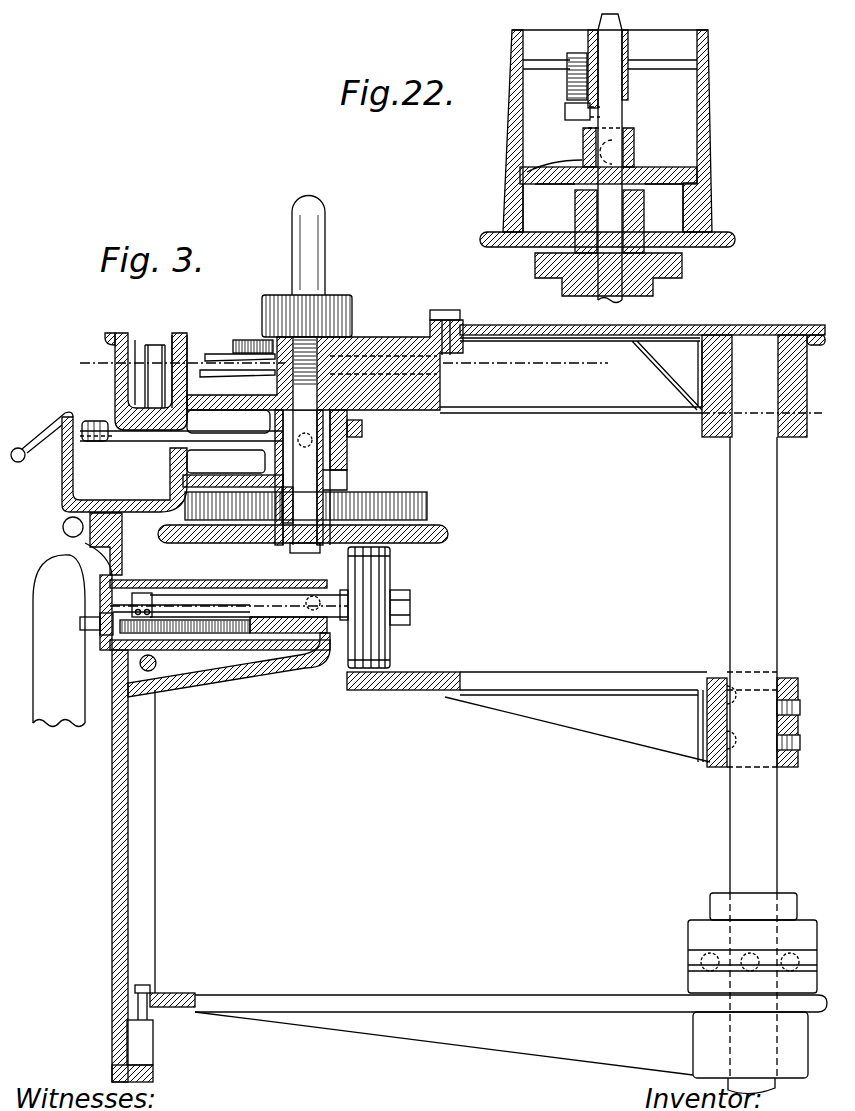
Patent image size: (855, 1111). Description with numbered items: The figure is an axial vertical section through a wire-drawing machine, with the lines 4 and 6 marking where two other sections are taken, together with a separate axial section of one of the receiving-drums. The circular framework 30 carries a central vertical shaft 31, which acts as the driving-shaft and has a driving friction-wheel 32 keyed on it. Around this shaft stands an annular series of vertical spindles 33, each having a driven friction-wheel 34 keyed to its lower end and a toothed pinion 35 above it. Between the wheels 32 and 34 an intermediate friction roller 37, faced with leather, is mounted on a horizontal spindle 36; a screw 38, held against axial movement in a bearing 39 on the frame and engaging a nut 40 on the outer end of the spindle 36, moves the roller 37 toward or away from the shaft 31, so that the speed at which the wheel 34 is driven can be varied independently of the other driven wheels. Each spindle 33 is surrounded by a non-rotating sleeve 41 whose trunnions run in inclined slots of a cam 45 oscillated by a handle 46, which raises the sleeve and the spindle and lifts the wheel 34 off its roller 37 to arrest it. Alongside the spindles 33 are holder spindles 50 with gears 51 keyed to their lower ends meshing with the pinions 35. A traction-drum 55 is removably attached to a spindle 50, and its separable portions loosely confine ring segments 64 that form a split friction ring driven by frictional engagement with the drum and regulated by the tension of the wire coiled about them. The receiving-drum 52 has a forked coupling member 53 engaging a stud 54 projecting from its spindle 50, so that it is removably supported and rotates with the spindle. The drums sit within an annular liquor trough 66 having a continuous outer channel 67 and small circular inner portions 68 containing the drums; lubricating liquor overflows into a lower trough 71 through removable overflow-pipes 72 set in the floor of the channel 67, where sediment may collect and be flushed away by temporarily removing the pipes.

In FIG. 3, the section line 4 4 is at (344, 364).
In FIG. 3, the section line 6 6 is at (158, 526).
In FIG. 3, the framework 30 is at (150, 832).
In FIG. 3, the vertical shaft 31 is at (742, 812).
In FIG. 3, the driving friction-wheel 32 is at (447, 672).
In FIG. 3, the vertical shaft or spindle 33 is at (337, 455).
In FIG. 3, the driven friction-wheel 34 is at (441, 545).
In FIG. 3, the toothed pinion 35 is at (330, 505).
In FIG. 3, the horizontal spindle 36 is at (272, 602).
In FIG. 3, the intermediate friction wheel or roller 37 is at (388, 637).
In FIG. 3, the screw 38 is at (212, 632).
In FIG. 3, the bearing 39 is at (255, 590).
In FIG. 3, the nut 40 is at (150, 606).
In FIG. 3, the sleeve 41 is at (337, 480).
In FIG. 3, the cam 45 is at (348, 430).
In FIG. 3, the handle 46 is at (233, 468).
In FIG. 22, the vertical spindle or holder 50 is at (600, 156).
In FIG. 3, the gear 51 is at (428, 508).
In FIG. 22, the wire receiving or storing drum 52 is at (712, 200).
In FIG. 22, the forked coupling member 53 is at (570, 93).
In FIG. 22, the stud 54 is at (585, 115).
In FIG. 3, the traction-drum 55 is at (353, 310).
In FIG. 3, the ring segment 64 is at (238, 372).
In FIG. 3, the liquor trough 66 is at (170, 338).
In FIG. 3, the outer channel 67 is at (147, 338).
In FIG. 3, the inner trough portion 68 is at (226, 338).
In FIG. 3, the lower trough 71 is at (93, 468).
In FIG. 3, the overflow-pipe 72 is at (135, 338).